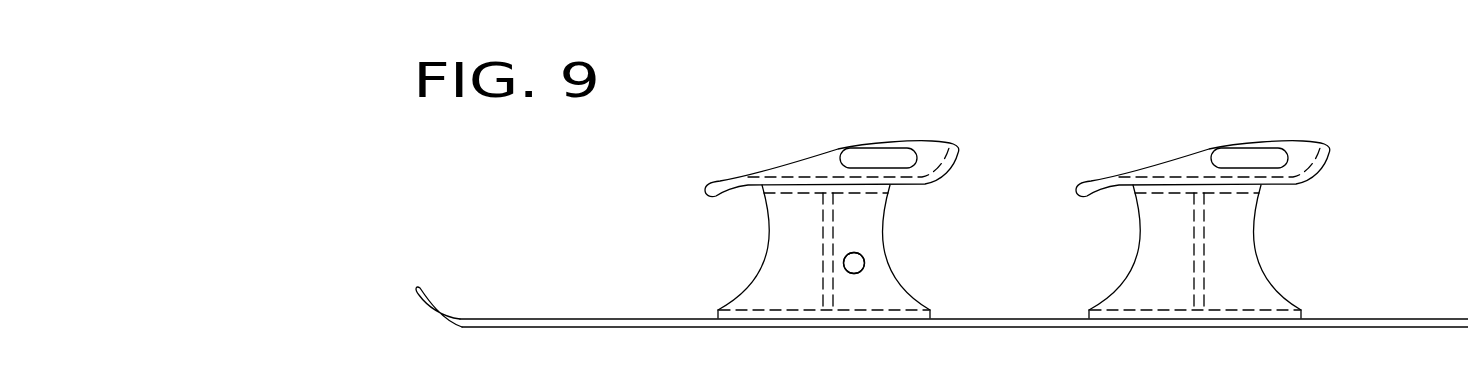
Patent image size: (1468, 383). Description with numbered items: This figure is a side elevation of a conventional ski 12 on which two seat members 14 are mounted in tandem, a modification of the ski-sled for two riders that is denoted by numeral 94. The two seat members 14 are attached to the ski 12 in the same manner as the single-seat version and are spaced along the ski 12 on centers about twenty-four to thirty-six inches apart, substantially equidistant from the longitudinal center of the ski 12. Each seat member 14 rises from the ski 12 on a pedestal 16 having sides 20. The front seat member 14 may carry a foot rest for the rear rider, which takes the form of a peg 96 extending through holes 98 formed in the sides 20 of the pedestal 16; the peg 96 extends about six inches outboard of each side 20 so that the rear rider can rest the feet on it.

The ski 12 is at (597, 319).
The seat member 14 is at (1047, 215).
The pedestal 16 is at (770, 237).
The sides of the pedestal 20 is at (893, 283).
The two-rider modification 94 is at (1003, 97).
The peg 96 is at (863, 256).
The holes 98 is at (850, 275).